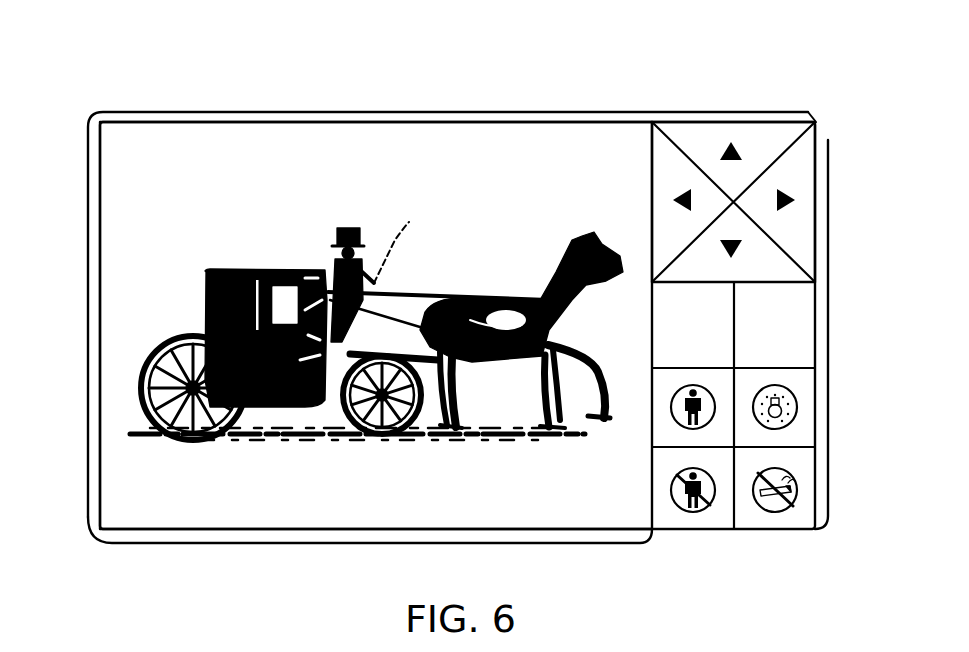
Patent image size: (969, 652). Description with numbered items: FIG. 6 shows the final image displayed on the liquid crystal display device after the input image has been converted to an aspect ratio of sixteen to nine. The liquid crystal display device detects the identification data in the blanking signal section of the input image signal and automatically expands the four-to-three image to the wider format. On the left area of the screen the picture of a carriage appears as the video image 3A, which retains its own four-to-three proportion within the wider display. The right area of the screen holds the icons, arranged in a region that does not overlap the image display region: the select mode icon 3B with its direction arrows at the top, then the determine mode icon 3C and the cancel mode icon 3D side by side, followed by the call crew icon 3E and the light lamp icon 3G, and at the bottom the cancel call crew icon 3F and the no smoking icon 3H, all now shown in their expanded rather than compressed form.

The video image 3A is at (253, 135).
The select mode icon 3B is at (817, 183).
The determine mode icon 3C is at (722, 302).
The cancel mode icon 3D is at (807, 355).
The call crew icon 3E is at (718, 385).
The cancel call crew icon 3F is at (723, 467).
The light lamp icon 3G is at (807, 430).
The no smoking icon 3H is at (808, 515).